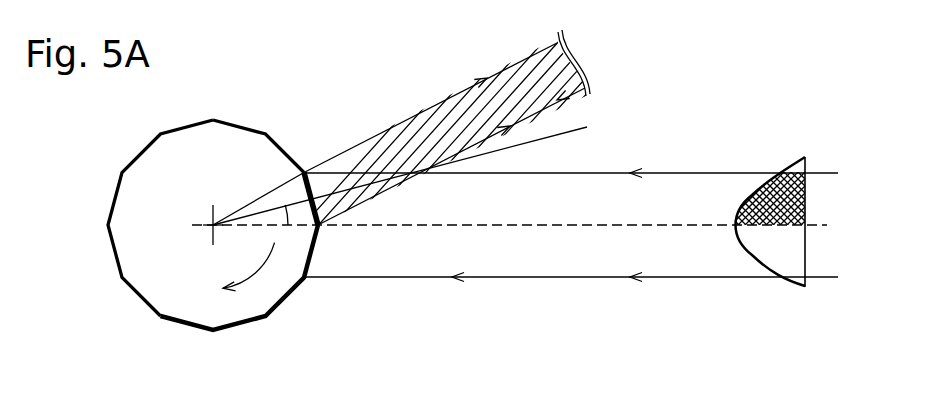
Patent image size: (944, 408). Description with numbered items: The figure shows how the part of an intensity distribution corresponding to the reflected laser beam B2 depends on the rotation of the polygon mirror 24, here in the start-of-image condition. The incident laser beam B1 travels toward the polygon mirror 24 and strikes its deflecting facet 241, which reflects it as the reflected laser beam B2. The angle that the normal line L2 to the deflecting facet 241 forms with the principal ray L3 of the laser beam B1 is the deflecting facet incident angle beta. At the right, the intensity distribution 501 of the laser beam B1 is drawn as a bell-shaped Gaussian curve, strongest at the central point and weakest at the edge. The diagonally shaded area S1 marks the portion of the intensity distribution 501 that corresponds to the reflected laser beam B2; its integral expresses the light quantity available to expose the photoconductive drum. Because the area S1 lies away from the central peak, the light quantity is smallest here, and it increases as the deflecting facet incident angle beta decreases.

The polygon mirror 24 is at (134, 294).
The deflecting facet 241 is at (328, 175).
The normal line L2 is at (258, 212).
The principal ray L3 is at (690, 223).
The laser beam B1 is at (535, 265).
The reflected laser beam B2 is at (446, 116).
The area S1 is at (803, 162).
The intensity distribution 501 is at (805, 260).